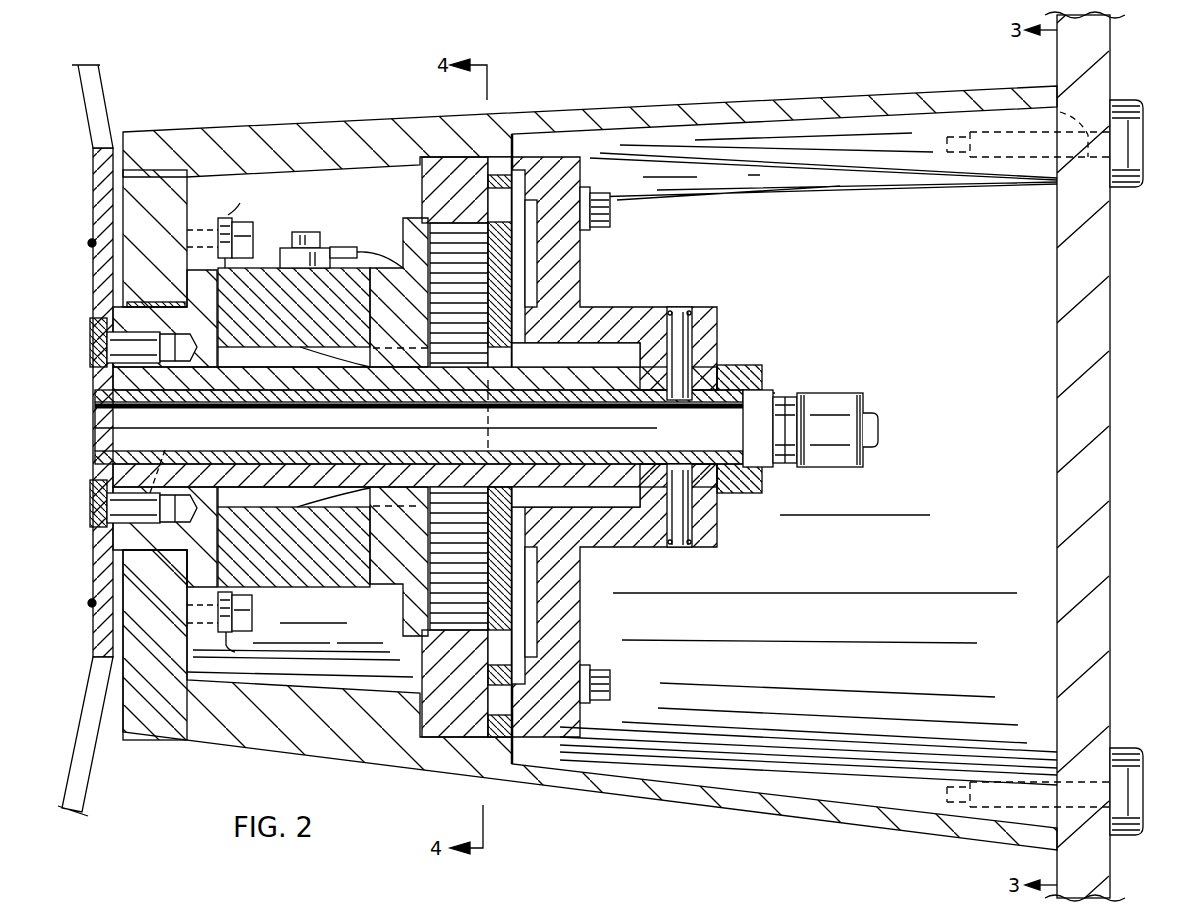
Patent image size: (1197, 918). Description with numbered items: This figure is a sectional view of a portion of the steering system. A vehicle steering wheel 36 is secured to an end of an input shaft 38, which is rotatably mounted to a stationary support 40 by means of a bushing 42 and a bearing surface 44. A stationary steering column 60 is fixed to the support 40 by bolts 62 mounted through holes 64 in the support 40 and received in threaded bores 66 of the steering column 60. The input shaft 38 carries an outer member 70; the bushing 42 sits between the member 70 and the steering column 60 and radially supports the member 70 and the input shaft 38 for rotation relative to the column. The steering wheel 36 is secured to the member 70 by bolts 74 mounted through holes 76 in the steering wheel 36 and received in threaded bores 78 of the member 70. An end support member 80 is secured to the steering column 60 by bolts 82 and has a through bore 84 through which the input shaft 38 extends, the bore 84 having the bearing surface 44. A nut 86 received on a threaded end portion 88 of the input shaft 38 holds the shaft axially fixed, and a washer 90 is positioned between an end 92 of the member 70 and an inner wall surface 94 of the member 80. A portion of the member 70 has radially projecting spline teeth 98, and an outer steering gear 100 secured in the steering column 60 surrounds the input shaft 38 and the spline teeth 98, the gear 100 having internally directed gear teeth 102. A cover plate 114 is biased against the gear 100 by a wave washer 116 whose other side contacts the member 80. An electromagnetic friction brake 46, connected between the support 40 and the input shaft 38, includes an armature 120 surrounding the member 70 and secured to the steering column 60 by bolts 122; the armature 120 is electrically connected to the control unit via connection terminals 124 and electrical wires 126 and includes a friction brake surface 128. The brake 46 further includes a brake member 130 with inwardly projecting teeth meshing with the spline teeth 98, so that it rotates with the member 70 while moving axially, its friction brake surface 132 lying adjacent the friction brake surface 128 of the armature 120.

The vehicle steering wheel 36 is at (100, 92).
The input shaft 38 is at (283, 388).
The stationary support 40 is at (1070, 282).
The bushing 42 is at (168, 302).
The bearing surface 44 is at (735, 363).
The electromagnetic friction brake 46 is at (327, 182).
The stationary steering column 60 is at (862, 103).
The bolts 62 is at (1142, 100).
The holes 64 is at (1086, 125).
The threaded bores 66 is at (992, 130).
The outer member 70 is at (148, 533).
The bolts 74 is at (92, 497).
The holes 76 is at (108, 530).
The threaded bores 78 is at (170, 461).
The end support member 80 is at (557, 617).
The bolts 82 is at (612, 212).
The through bore 84 is at (705, 467).
The nut 86 is at (762, 480).
The threaded end portion 88 is at (772, 388).
The washer 90 is at (667, 355).
The end 92 is at (648, 378).
The inner wall surface 94 is at (660, 317).
The spline teeth 98 is at (580, 337).
The outer steering gear 100 is at (450, 180).
The internally directed gear teeth 102 is at (447, 247).
The cover plate 114 is at (500, 275).
The wave washer 116 is at (547, 330).
The armature 120 is at (262, 578).
The bolts 122 is at (247, 232).
The connection terminals 124 is at (317, 232).
The electrical wires 126 is at (385, 250).
The friction brake surface 128 is at (376, 314).
The brake member 130 is at (395, 548).
The friction brake surface 132 is at (370, 333).